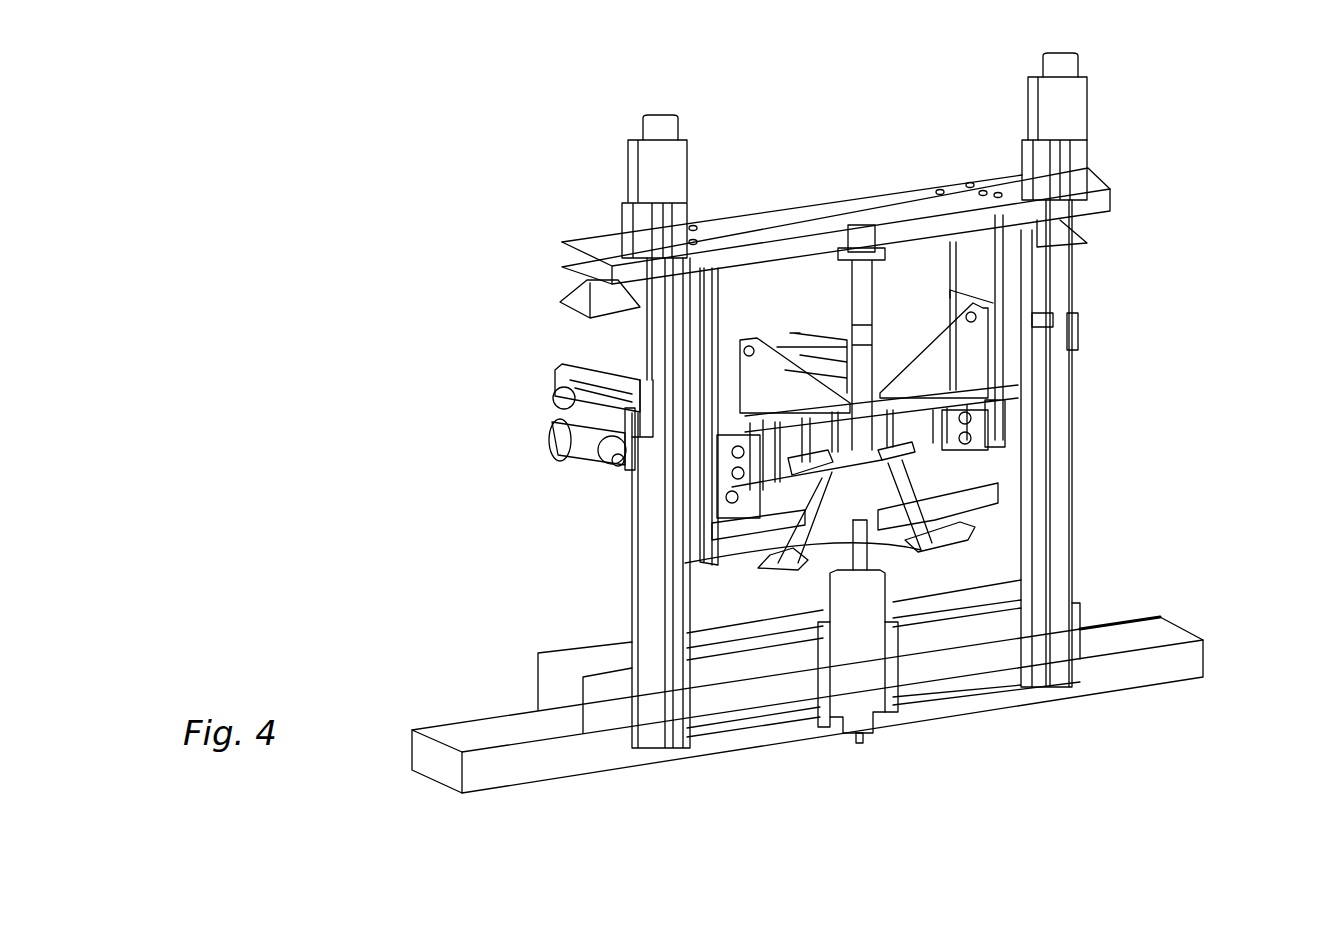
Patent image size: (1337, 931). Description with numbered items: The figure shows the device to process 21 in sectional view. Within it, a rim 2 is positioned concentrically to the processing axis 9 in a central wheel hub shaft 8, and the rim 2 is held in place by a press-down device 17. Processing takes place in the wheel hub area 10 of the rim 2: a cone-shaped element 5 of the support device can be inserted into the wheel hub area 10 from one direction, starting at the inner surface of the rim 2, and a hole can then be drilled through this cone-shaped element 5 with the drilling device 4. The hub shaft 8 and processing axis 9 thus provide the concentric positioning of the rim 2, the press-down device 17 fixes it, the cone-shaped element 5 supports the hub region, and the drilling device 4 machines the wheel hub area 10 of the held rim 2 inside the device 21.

The rim 2 is at (917, 548).
The drilling device 4 is at (903, 630).
The cone-shaped element 5 is at (840, 535).
The central wheel hub shaft 8 is at (857, 55).
The processing axis 9 is at (865, 765).
The wheel hub area 10 is at (817, 343).
The press-down device 17 is at (885, 448).
The device to process 21 is at (1218, 192).